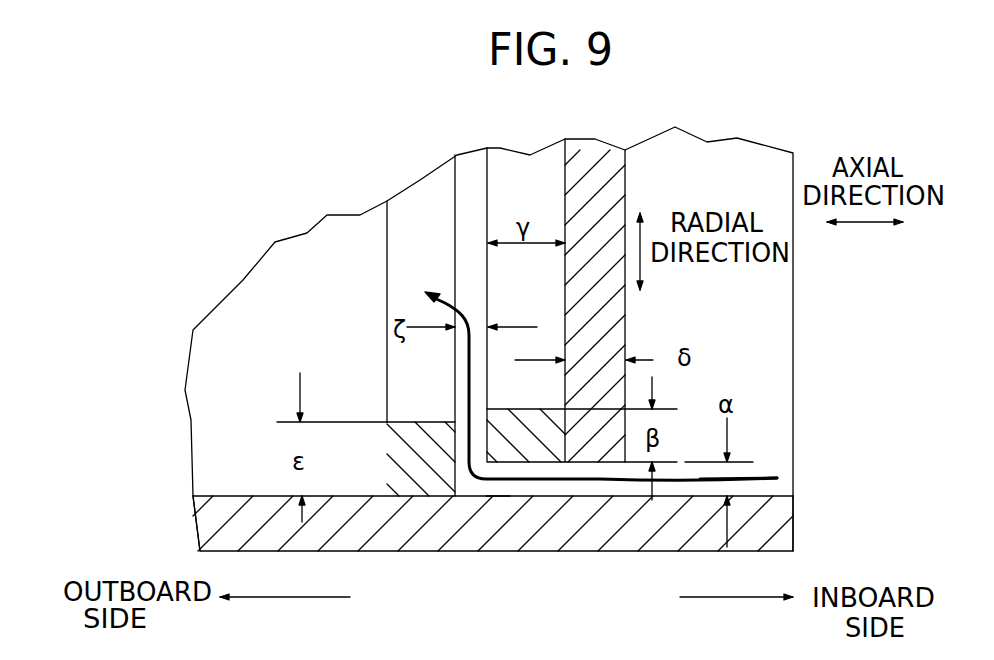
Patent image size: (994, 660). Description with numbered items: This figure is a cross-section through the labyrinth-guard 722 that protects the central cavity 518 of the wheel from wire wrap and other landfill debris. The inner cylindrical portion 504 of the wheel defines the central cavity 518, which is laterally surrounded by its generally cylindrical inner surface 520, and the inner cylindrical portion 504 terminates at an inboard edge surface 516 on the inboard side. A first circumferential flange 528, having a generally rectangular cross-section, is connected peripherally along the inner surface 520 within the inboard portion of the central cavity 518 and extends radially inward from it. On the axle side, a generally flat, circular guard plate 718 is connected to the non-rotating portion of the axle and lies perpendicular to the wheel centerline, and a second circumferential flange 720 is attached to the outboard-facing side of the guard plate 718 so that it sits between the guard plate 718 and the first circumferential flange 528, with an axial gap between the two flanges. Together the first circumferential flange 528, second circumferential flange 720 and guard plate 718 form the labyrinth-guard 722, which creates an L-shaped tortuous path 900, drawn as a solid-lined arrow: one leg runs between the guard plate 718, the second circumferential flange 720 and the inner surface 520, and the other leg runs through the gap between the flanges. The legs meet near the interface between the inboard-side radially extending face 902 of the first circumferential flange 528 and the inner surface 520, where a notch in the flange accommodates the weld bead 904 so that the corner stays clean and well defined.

The central cavity 518 is at (762, 304).
The second circumferential flange 720 is at (523, 187).
The guard plate 718 is at (610, 207).
The first circumferential flange 528 is at (407, 365).
The inner cylindrical portion 504 is at (573, 533).
The inboard edge surface 516 is at (802, 523).
The inner surface 520 is at (242, 495).
The inboard-side radially extending face 902 is at (493, 488).
The tortuous path 900 is at (757, 477).
The weld bead 904 is at (460, 455).
The labyrinth-guard 722 is at (503, 504).